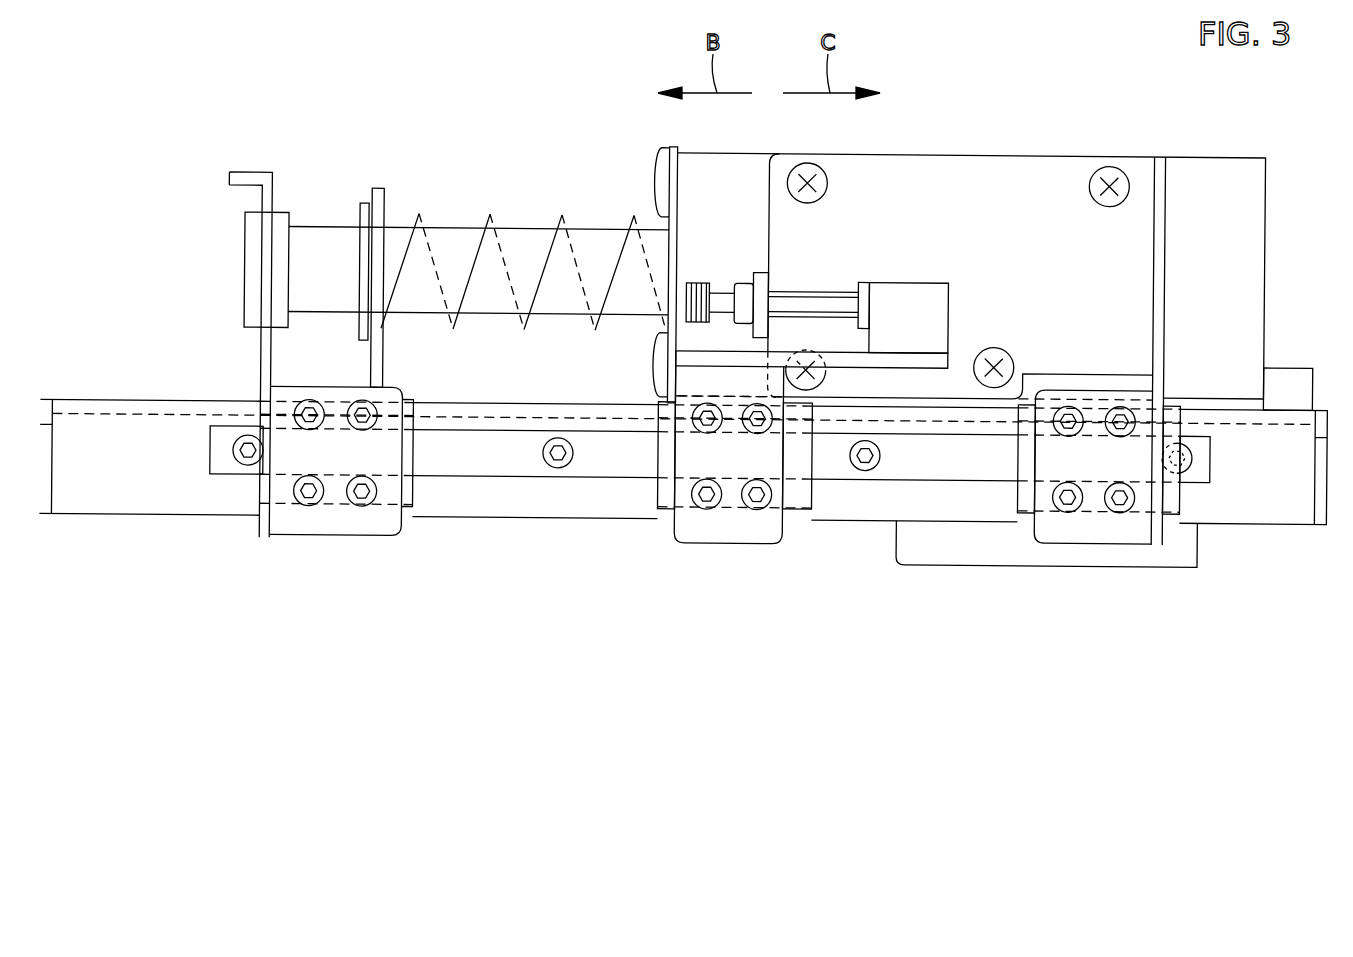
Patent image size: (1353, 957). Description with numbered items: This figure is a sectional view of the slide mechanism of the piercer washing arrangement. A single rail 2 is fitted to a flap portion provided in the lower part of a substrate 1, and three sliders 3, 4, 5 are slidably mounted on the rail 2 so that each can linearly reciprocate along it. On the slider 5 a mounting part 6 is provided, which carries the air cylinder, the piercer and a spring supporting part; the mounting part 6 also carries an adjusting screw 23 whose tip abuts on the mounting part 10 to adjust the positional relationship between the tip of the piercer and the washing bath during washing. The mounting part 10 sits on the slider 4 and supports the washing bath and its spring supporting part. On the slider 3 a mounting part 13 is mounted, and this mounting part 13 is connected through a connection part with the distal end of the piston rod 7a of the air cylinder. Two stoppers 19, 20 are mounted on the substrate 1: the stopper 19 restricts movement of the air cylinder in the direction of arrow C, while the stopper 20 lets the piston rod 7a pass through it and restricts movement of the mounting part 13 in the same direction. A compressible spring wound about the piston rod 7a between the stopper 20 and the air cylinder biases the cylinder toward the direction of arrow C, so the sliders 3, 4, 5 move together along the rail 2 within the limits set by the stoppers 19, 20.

The substrate 1 is at (496, 502).
The rail 2 is at (610, 465).
The slider 3 is at (411, 493).
The slider 4 is at (798, 499).
The slider 5 is at (1027, 507).
The mounting part 6 is at (1157, 175).
The piston rod 7a is at (532, 245).
The mounting part 10 is at (724, 535).
The mounting part 13 is at (262, 532).
The stopper 19 is at (1283, 385).
The stopper 20 is at (378, 191).
The adjusting screw 23 is at (837, 297).